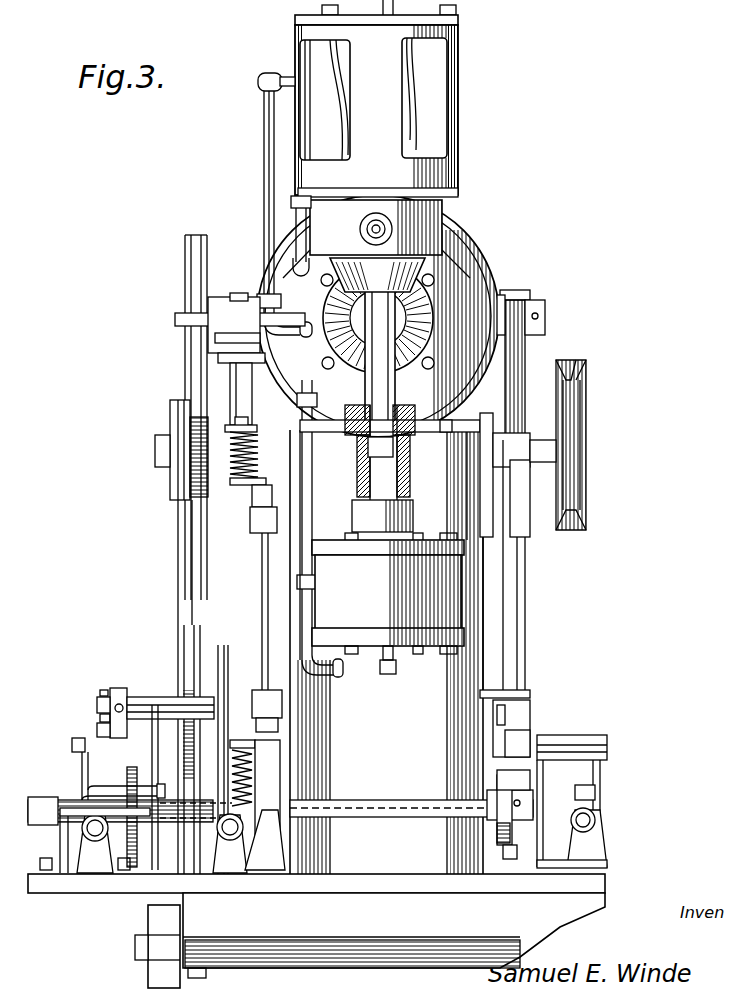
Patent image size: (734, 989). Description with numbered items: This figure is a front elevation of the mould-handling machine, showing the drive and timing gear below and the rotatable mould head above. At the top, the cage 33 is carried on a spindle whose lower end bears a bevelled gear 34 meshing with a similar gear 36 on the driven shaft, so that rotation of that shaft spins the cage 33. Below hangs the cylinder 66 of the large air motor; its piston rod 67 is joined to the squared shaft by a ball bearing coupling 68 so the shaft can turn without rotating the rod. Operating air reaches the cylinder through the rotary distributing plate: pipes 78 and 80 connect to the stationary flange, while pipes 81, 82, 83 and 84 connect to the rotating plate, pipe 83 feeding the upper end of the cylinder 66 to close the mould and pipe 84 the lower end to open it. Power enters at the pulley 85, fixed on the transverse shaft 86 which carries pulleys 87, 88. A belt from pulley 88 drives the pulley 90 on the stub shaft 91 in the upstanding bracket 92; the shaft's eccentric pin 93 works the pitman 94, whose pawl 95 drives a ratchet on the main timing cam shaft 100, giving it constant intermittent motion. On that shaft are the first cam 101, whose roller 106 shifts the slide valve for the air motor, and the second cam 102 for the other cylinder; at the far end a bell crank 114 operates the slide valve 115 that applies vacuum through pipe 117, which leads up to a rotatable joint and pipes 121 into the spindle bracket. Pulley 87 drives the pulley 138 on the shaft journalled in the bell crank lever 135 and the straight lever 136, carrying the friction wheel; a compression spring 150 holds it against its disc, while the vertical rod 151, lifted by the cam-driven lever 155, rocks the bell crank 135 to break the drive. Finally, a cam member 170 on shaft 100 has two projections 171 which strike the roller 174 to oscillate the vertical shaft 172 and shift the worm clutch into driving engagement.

The cage 33 is at (455, 175).
The bevelled gear 34 is at (420, 270).
The gear 36 is at (418, 320).
The cylinder 66 is at (388, 603).
The piston rod 67 is at (400, 490).
The ball bearing coupling 68 is at (455, 430).
The pipe 78 is at (228, 684).
The pipe 80 is at (158, 786).
The pipe 81 is at (263, 119).
The pipe 82 is at (296, 218).
The pipe 83 is at (338, 516).
The pipe 84 is at (303, 600).
The pulley 85 is at (578, 385).
The transverse shaft 86 is at (530, 450).
The pulley 87 is at (205, 502).
The pulley 88 is at (168, 488).
The pulley 90 is at (200, 656).
The transverse stub shaft 91 is at (133, 697).
The bracket 92 is at (158, 875).
The adjustable eccentric pin 93 is at (108, 693).
The pitman 94 is at (105, 718).
The pawl 95 is at (140, 873).
The transverse shaft 100 is at (368, 820).
The first cam 101 is at (84, 777).
The second cam 102 is at (225, 885).
The roller 106 is at (80, 738).
The bell crank 114 is at (588, 766).
The slide valve 115 is at (596, 820).
The pipe 117 is at (595, 792).
The pipes 121 is at (386, 230).
The bell crank lever 135 is at (238, 376).
The straight lever 136 is at (525, 368).
The pulley 138 is at (186, 289).
The compression spring 150 is at (246, 484).
The vertical rod 151 is at (262, 561).
The lever 155 is at (285, 738).
The cam member 170 is at (500, 830).
The projections 171 is at (505, 779).
The vertical shaft 172 is at (522, 658).
The roller 174 is at (535, 752).